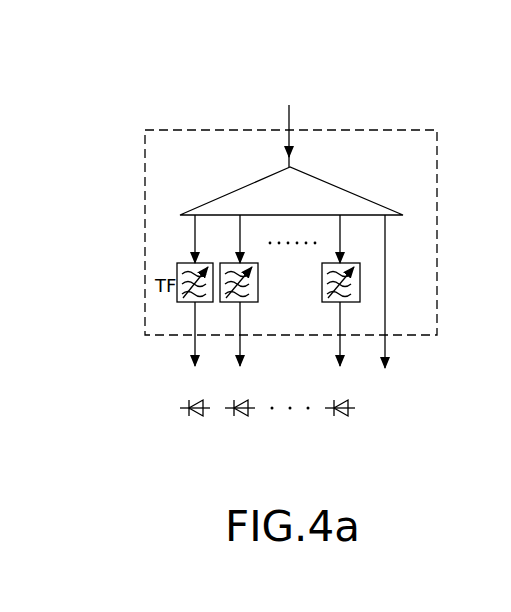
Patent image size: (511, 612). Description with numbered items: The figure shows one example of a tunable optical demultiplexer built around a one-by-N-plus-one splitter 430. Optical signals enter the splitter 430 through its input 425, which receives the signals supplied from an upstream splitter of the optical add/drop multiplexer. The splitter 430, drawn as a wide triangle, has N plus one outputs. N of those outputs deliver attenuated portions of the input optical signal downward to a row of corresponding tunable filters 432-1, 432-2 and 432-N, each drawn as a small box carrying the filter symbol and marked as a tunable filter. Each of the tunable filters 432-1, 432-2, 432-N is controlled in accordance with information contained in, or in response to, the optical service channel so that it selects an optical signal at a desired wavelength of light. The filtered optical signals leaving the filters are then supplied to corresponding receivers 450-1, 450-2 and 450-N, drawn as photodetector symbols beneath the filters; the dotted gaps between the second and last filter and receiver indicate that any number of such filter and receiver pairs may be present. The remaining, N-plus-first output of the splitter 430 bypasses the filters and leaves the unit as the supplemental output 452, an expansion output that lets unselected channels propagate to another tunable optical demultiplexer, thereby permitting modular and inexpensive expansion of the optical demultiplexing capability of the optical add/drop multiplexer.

The input 425 is at (290, 125).
The 1×N+1 splitter 430 is at (197, 213).
The tunable filter 432-1 is at (188, 304).
The tunable filter 432-2 is at (249, 304).
The tunable filter 432-N is at (352, 304).
The supplemental output 452 is at (388, 368).
The receiver 450-1 is at (203, 414).
The receiver 450-2 is at (242, 413).
The receiver 450-N is at (343, 413).